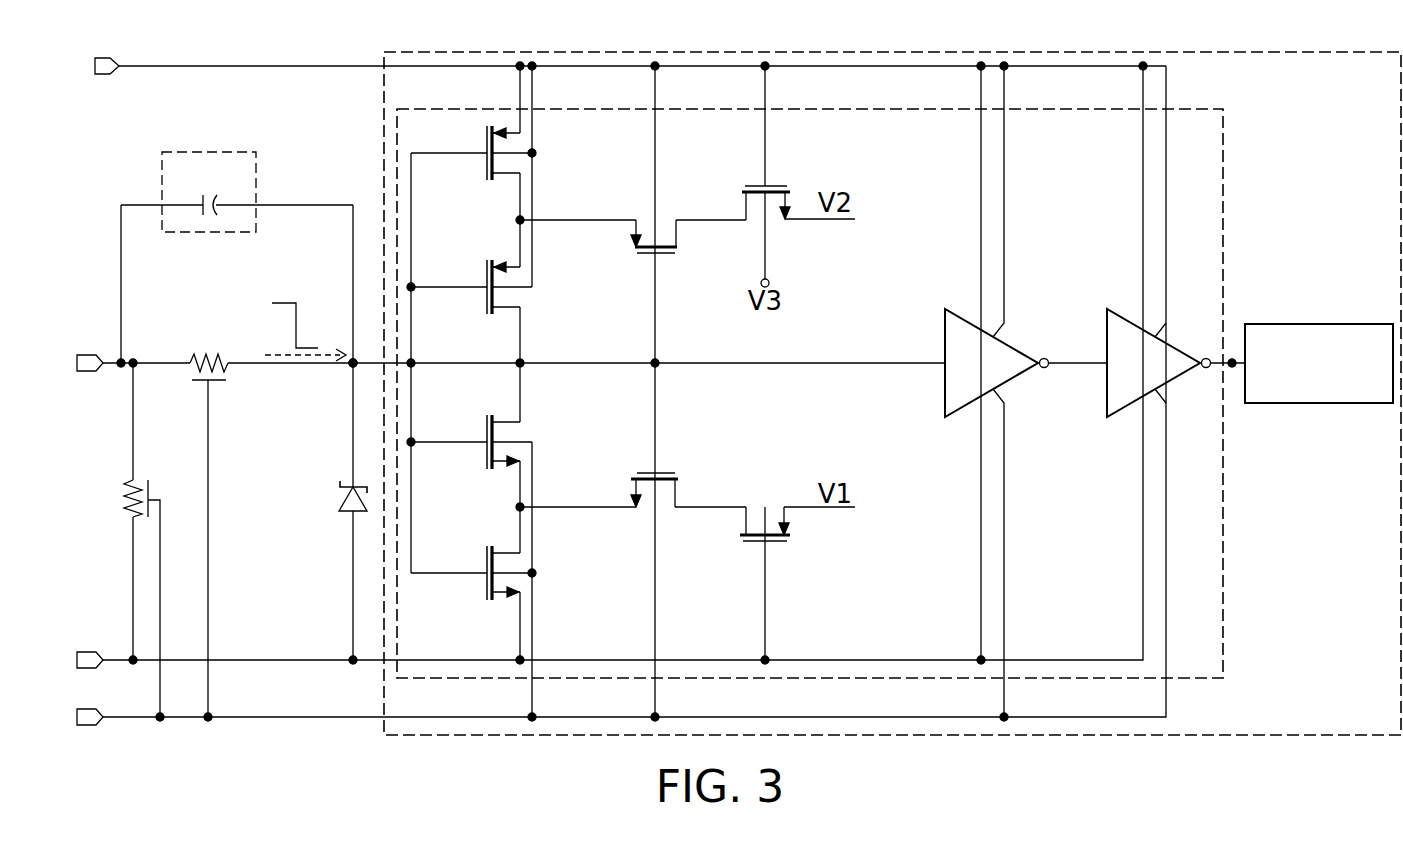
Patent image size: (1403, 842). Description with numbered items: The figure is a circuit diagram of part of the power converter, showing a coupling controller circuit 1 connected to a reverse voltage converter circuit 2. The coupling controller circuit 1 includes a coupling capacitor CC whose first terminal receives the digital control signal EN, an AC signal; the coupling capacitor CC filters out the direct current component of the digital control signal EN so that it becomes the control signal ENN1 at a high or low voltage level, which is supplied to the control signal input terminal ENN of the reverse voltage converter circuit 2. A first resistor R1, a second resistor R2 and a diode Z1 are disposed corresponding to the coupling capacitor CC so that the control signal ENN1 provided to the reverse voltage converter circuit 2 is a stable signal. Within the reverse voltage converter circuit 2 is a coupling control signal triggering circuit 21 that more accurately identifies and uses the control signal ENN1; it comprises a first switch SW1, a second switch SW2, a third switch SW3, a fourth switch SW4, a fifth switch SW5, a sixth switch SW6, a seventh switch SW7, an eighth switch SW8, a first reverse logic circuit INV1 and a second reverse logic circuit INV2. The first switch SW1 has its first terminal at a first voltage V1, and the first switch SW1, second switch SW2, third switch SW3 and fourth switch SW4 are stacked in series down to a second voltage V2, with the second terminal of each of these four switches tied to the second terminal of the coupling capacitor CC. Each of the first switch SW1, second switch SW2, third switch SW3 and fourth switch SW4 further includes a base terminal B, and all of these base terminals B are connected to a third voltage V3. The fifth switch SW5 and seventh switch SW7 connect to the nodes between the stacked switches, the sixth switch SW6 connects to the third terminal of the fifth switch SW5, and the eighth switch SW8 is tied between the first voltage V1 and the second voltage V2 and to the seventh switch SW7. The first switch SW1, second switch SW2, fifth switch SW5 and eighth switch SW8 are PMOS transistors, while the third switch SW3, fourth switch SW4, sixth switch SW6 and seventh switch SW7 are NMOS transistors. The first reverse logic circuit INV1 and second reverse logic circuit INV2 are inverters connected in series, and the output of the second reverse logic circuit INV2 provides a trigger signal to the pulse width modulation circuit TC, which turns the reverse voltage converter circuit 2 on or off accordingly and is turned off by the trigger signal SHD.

The coupling controller circuit 1 is at (211, 151).
The reverse voltage converter circuit 2 is at (1228, 52).
The coupling control signal triggering circuit 21 is at (1222, 137).
The coupling capacitor CC is at (237, 189).
The first resistor R1 is at (113, 498).
The second resistor R2 is at (209, 348).
The diode Z1 is at (272, 498).
The digital control signal EN is at (490, 366).
The control signal input terminal ENN is at (350, 367).
The control signal ENN1 is at (303, 316).
The first voltage V1 is at (610, 66).
The second voltage V2 is at (590, 370).
The third voltage V3 is at (601, 399).
The first switch SW1 is at (473, 155).
The second switch SW2 is at (471, 289).
The third switch SW3 is at (471, 443).
The fourth switch SW4 is at (473, 574).
The fifth switch SW5 is at (641, 254).
The sixth switch SW6 is at (780, 189).
The seventh switch SW7 is at (641, 475).
The eighth switch SW8 is at (780, 541).
The base terminal B is at (517, 154).
The first reverse logic circuit INV1 is at (945, 338).
The second reverse logic circuit INV2 is at (1107, 338).
The pulse width modulation circuit TC is at (1320, 324).
The trigger signal SHD is at (1232, 367).